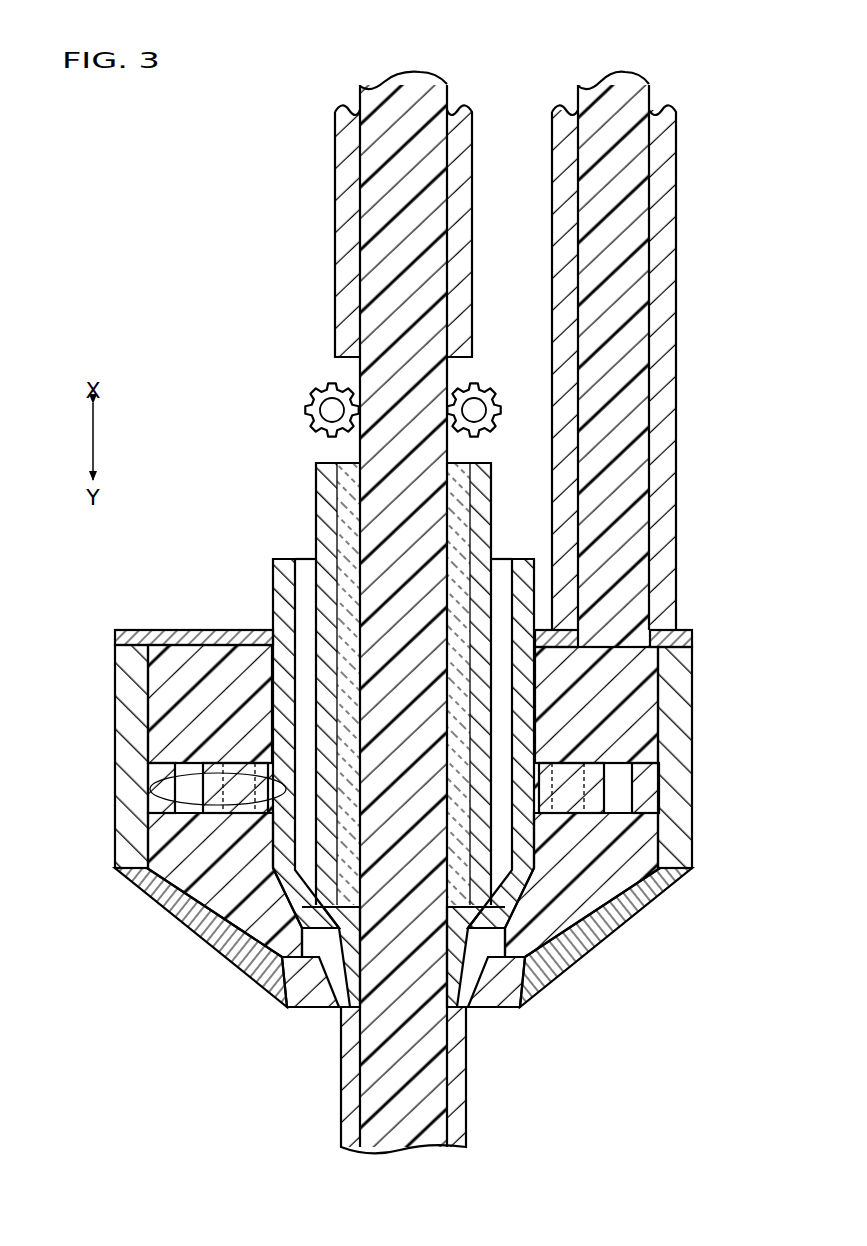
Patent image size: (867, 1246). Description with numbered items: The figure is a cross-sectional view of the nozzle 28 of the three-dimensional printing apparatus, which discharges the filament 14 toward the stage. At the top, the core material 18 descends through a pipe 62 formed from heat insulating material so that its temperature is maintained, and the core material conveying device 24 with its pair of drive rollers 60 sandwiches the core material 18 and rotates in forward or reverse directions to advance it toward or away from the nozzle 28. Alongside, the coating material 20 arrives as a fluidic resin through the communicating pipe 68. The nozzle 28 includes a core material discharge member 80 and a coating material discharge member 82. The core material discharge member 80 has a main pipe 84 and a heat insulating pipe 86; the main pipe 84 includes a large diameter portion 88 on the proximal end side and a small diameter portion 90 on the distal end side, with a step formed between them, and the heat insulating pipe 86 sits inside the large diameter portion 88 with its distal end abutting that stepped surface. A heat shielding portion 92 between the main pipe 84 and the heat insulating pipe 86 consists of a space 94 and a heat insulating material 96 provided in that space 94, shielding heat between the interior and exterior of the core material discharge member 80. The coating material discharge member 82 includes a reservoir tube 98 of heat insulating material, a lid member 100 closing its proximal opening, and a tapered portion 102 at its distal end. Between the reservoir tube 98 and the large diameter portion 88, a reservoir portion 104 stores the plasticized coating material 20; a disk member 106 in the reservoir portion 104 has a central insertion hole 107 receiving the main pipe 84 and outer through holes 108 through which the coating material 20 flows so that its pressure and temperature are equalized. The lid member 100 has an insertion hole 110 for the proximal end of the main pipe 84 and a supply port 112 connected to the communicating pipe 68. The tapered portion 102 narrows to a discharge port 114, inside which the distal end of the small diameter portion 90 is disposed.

The filament 14 is at (338, 1096).
The core material 18 is at (424, 80).
The coating material 20 is at (630, 80).
The core material conveying device 24 is at (366, 391).
The nozzle 28 is at (163, 548).
The drive rollers 60 is at (318, 393).
The pipe 62 is at (333, 177).
The communicating pipe 68 is at (666, 136).
The core material discharge member 80 is at (342, 743).
The coating material discharge member 82 is at (641, 803).
The main pipe 84 is at (270, 607).
The heat insulating pipe 86 is at (330, 584).
The large diameter portion 88 is at (272, 672).
The small diameter portion 90 is at (338, 947).
The heat shielding portion 92 is at (346, 684).
The space 94 is at (303, 558).
The heat insulating material 96 is at (316, 487).
The reservoir tube 98 is at (675, 781).
The lid member 100 is at (690, 640).
The tapered portion 102 is at (631, 916).
The reservoir portion 104 is at (172, 718).
The disk member 106 is at (152, 772).
The insertion hole 107 is at (205, 770).
The through holes 108 is at (215, 790).
The insertion hole 110 is at (534, 636).
The supply port 112 is at (643, 640).
The discharge port 114 is at (472, 985).